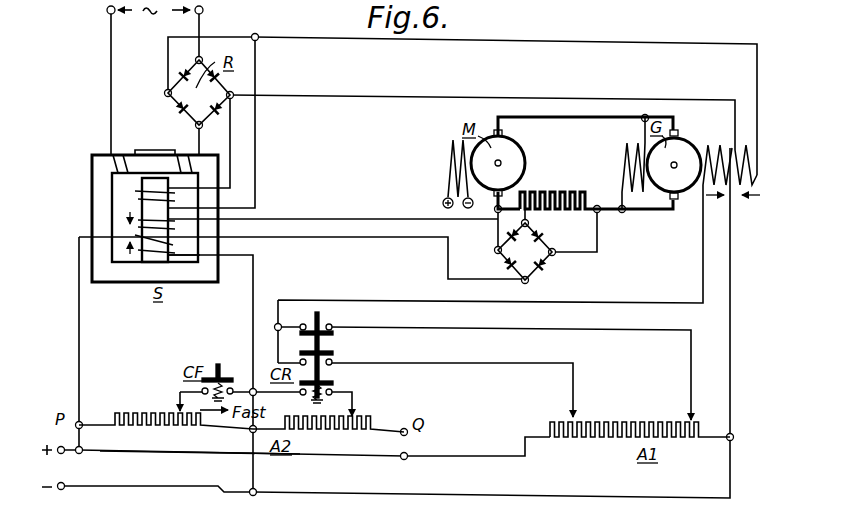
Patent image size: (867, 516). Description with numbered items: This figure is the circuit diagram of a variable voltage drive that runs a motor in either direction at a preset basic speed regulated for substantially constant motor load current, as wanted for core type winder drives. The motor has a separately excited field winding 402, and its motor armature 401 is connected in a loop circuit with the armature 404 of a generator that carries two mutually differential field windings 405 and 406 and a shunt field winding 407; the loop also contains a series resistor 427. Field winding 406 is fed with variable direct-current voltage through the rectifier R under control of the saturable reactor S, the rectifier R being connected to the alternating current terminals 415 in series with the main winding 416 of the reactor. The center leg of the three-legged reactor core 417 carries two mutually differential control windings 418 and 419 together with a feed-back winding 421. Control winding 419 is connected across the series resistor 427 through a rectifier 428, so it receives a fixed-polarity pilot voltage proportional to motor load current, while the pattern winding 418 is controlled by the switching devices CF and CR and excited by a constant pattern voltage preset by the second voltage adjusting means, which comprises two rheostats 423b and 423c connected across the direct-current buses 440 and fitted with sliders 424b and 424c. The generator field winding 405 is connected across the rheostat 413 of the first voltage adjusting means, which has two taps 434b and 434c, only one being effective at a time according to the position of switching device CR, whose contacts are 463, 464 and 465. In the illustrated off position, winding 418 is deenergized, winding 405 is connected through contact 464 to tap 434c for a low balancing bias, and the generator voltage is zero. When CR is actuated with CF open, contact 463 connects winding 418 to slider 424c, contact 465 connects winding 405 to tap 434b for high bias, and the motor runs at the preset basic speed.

The alternating current terminals 415 is at (107, 12).
The rectifier R is at (199, 92).
The saturable reactor S is at (155, 218).
The main winding 416 is at (165, 140).
The feed-back winding 421 is at (137, 191).
The control winding 419 is at (168, 222).
The control winding 418 is at (152, 262).
The three-legged reactor core 417 is at (219, 268).
The motor armature 401 is at (520, 150).
The field winding 402 is at (447, 160).
The series resistor 427 is at (548, 187).
The rectifier 428 is at (530, 253).
The generator armature 404 is at (658, 185).
The shunt field winding 407 is at (622, 168).
The generator field winding 405 is at (716, 147).
The generator field winding 406 is at (755, 178).
The switching device CF is at (217, 382).
The switching device CR is at (317, 355).
The contact 464 is at (332, 326).
The contact 465 is at (333, 361).
The contact 463 is at (333, 393).
The rheostat 423b is at (189, 436).
The slider 424b is at (178, 407).
The rheostat 423c is at (326, 441).
The slider 424c is at (356, 412).
The rheostat 413 is at (600, 442).
The tap 434b is at (566, 412).
The tap 434c is at (688, 416).
The direct-current buses 440 is at (236, 452).